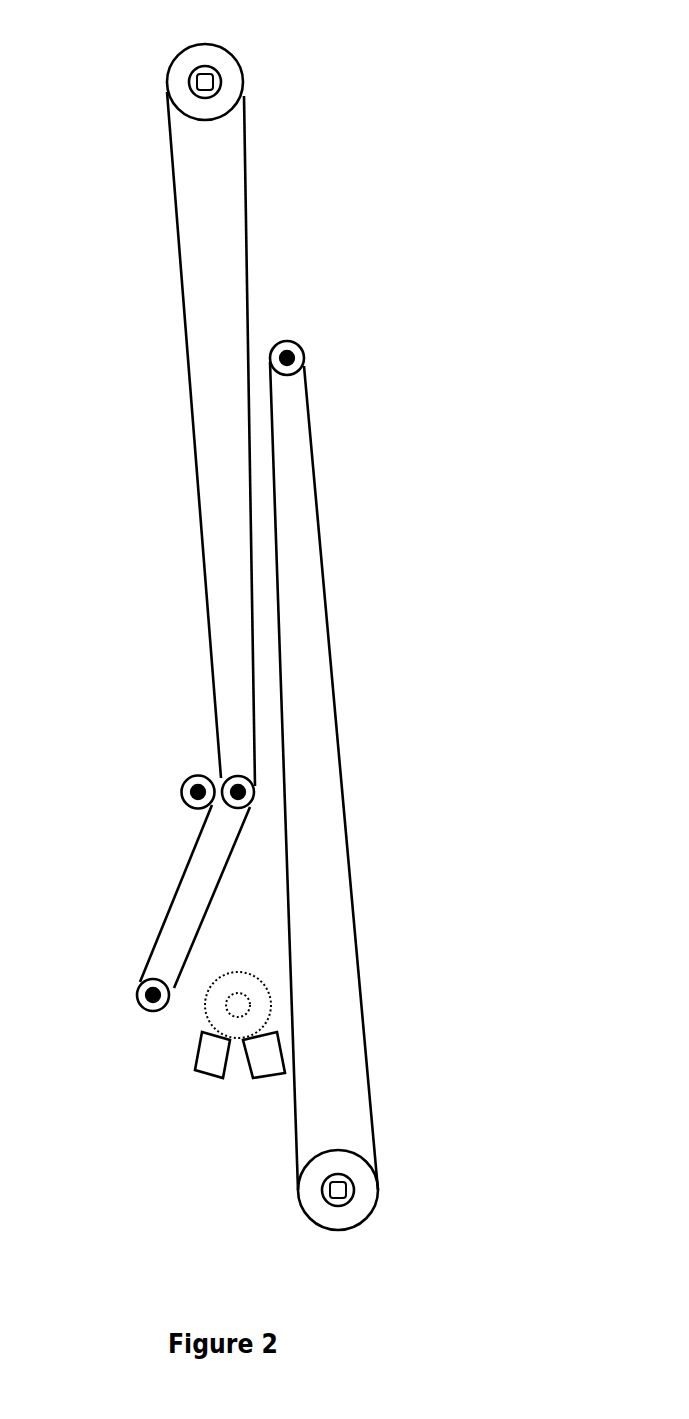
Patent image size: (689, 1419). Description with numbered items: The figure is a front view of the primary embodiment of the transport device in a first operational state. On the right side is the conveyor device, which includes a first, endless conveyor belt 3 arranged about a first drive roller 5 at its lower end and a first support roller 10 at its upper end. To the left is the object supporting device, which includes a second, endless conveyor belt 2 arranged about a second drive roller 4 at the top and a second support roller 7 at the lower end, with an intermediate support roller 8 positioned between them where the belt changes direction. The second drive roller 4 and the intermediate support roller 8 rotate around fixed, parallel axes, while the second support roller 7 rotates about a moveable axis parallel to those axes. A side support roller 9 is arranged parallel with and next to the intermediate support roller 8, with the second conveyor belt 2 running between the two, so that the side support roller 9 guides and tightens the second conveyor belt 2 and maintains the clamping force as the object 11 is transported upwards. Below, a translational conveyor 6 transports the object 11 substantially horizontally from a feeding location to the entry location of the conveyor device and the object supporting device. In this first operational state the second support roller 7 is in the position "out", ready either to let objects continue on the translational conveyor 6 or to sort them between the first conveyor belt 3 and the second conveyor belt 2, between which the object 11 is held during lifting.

The second conveyor belt 2 is at (182, 312).
The first conveyor belt 3 is at (327, 598).
The second drive roller 4 is at (178, 64).
The first drive roller 5 is at (358, 1212).
The translational conveyor 6 is at (203, 1067).
The second support roller 7 is at (139, 1003).
The intermediate support roller 8 is at (229, 779).
The side support roller 9 is at (186, 803).
The first support roller 10 is at (303, 349).
The object 11 is at (242, 983).